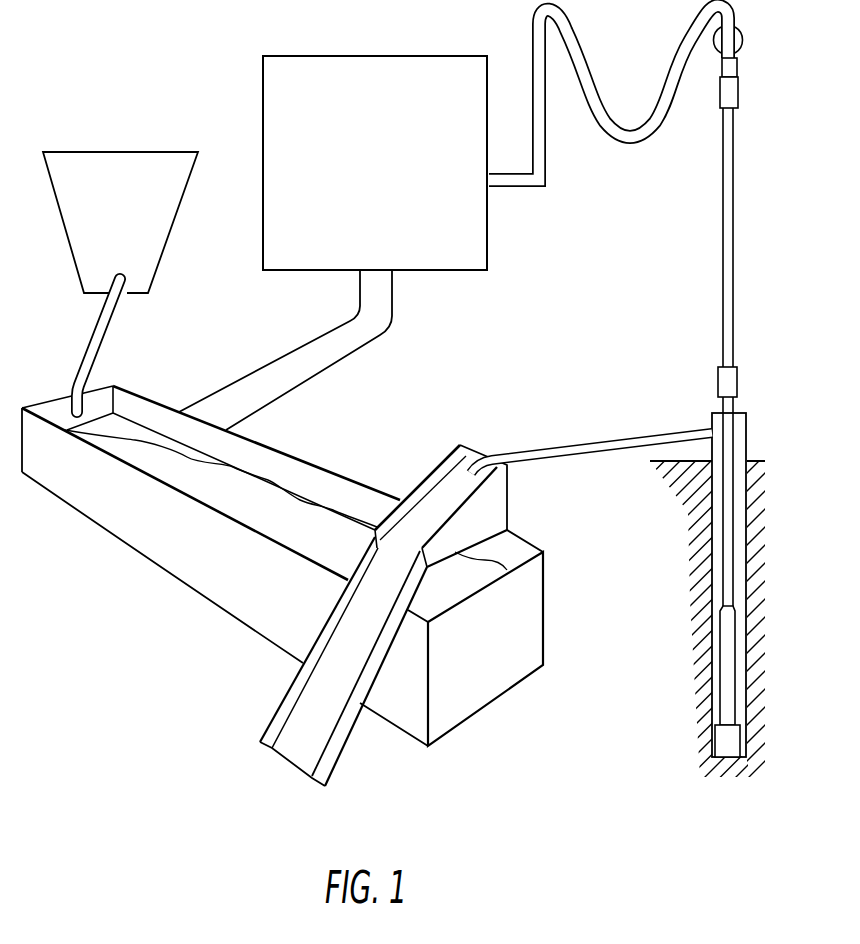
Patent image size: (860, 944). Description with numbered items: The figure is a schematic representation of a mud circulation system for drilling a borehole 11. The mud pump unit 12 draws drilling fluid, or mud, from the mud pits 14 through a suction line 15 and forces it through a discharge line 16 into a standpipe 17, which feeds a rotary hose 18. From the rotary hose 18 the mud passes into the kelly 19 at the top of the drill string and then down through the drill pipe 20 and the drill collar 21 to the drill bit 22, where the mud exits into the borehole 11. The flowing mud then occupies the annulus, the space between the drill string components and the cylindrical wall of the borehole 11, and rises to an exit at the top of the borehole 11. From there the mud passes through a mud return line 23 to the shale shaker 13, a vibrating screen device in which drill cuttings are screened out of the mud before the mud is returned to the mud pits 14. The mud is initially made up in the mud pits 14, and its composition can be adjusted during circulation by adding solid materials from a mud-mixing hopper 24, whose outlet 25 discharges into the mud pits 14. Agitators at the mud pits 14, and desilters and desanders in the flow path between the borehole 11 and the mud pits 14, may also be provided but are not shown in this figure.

The borehole 11 is at (706, 683).
The mud pump unit 12 is at (385, 172).
The shale shaker 13 is at (413, 468).
The mud pits 14 is at (148, 573).
The suction line 15 is at (303, 357).
The discharge line 16 is at (509, 190).
The standpipe 17 is at (532, 108).
The rotary hose 18 is at (596, 110).
The kelly 19 is at (728, 193).
The drill pipe 20 is at (726, 452).
The drill collar 21 is at (727, 630).
The drill bit 22 is at (723, 740).
The mud return line 23 is at (612, 441).
The mud-mixing hopper 24 is at (158, 224).
The outlet 25 is at (104, 340).